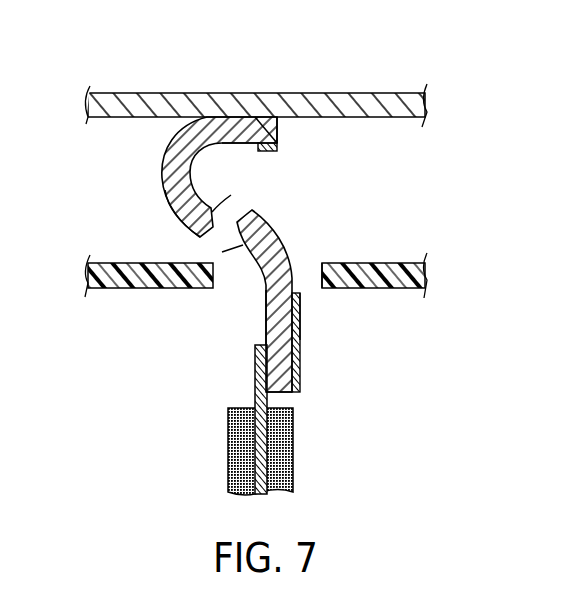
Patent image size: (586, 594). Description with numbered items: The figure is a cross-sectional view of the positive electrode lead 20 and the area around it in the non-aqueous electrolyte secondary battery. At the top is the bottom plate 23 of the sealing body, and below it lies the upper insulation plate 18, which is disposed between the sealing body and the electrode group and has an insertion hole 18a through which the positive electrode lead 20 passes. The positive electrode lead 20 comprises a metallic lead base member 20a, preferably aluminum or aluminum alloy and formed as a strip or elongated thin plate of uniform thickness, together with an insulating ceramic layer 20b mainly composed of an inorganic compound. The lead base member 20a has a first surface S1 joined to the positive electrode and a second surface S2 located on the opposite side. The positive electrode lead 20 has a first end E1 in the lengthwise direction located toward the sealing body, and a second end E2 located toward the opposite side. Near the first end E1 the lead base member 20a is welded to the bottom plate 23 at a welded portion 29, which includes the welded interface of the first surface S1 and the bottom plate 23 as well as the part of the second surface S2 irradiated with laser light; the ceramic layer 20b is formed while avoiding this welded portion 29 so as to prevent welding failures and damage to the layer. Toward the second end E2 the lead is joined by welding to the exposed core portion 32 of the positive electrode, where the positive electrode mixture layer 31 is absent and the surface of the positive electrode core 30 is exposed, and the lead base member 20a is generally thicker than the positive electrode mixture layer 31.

The bottom plate 23 is at (240, 93).
The positive electrode lead 20 is at (157, 162).
The lead base member 20a is at (182, 208).
The ceramic layer 20b is at (278, 149).
The welded portion 29 is at (238, 144).
The first end E1 is at (278, 132).
The second end E2 is at (292, 395).
The upper insulation plate 18 is at (402, 262).
The insertion hole 18a is at (322, 266).
The first surface S1 is at (266, 313).
The second surface S2 is at (292, 312).
The exposed core portion 32 is at (255, 364).
The positive electrode core 30 is at (262, 430).
The positive electrode mixture layer 31 is at (282, 472).